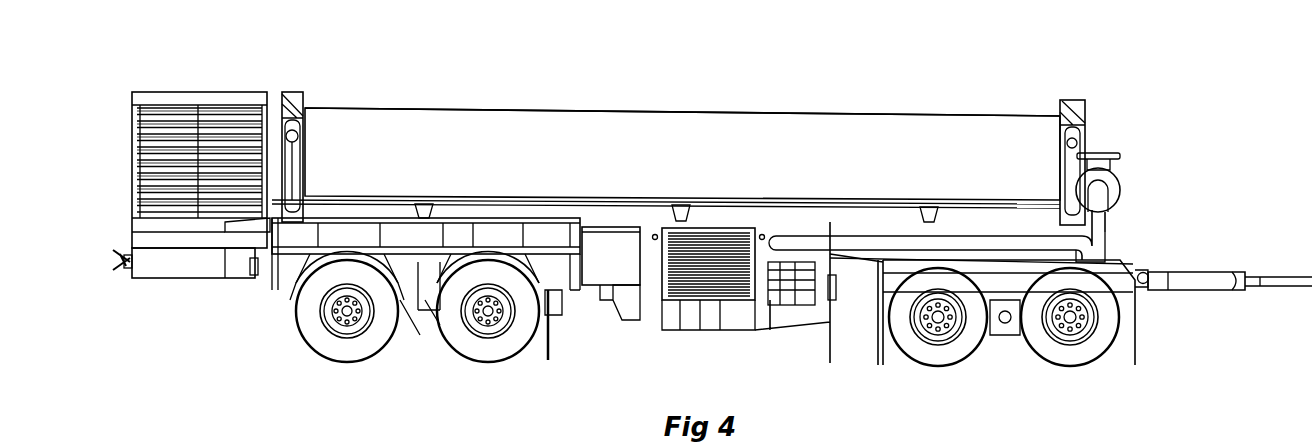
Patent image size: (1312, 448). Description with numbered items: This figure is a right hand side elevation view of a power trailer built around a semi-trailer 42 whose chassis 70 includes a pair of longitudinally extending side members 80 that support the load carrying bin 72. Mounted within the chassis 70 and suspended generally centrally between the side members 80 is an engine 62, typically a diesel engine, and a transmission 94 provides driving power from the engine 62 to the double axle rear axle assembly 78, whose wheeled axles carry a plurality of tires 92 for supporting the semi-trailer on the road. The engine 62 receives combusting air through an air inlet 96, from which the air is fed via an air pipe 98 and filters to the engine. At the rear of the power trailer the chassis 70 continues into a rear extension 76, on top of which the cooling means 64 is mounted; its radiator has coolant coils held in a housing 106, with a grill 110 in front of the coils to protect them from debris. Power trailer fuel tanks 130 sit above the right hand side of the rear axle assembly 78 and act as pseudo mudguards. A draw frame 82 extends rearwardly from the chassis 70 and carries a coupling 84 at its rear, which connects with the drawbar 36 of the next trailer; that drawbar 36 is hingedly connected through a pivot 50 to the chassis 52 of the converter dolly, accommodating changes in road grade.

The drawbar 36 is at (1215, 275).
The semi-trailer 42 is at (975, 108).
The pivot 50 is at (1147, 274).
The chassis of the converter dolly 52 is at (1112, 268).
The engine 62 is at (745, 320).
The cooling means 64 is at (281, 102).
The chassis 70 is at (648, 225).
The bin 72 is at (812, 137).
The rear extension 76 is at (188, 264).
The rear axle assembly 78 is at (428, 348).
The side members 80 is at (648, 268).
The draw frame 82 is at (118, 258).
The coupling 84 is at (128, 276).
The tires 92 is at (330, 345).
The transmission 94 is at (612, 290).
The air inlet 96 is at (1110, 155).
The air pipe 98 is at (893, 232).
The housing 106 is at (197, 96).
The grill 110 is at (212, 137).
The fuel tanks 130 is at (413, 237).